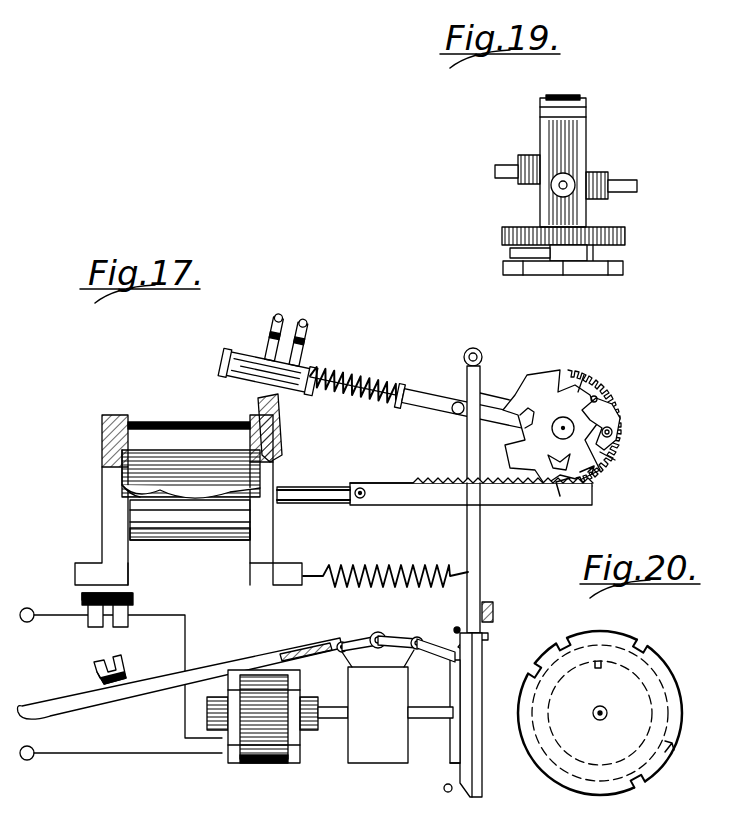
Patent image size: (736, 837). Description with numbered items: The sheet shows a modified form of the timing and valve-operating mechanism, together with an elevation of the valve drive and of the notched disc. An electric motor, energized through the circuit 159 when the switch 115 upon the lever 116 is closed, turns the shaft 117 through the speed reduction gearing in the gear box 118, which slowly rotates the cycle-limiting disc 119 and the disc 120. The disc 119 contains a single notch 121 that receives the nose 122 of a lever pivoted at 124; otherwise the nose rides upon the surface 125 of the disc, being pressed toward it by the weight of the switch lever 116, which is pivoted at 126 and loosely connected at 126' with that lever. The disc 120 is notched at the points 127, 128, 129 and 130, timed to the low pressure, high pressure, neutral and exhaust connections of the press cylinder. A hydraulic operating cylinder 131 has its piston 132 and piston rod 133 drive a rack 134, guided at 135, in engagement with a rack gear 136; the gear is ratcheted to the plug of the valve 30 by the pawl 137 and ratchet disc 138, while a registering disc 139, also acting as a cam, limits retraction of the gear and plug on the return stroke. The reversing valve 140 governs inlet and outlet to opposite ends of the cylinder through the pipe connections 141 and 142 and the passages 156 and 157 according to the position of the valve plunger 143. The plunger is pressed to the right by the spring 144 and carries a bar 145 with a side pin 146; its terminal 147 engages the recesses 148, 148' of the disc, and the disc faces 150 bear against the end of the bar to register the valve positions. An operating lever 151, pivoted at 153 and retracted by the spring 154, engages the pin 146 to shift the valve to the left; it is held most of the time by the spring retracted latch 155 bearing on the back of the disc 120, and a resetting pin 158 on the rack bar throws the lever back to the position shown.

In FIG. 19, the valve 30 is at (575, 153).
In FIG. 19, the rack gear 136 is at (620, 231).
In FIG. 17, the rack gear 136 is at (562, 498).
In FIG. 19, the pawl 137 is at (590, 253).
In FIG. 17, the pawl 137 is at (621, 430).
In FIG. 19, the ratchet disc 138 is at (512, 252).
In FIG. 17, the ratchet disc 138 is at (598, 380).
In FIG. 19, the registering disc 139 is at (572, 272).
In FIG. 17, the registering disc 139 is at (545, 380).
In FIG. 17, the valve 140 is at (230, 380).
In FIG. 17, the pipe connection 141 is at (274, 322).
In FIG. 17, the pipe connection 142 is at (306, 322).
In FIG. 17, the valve plunger 143 is at (374, 380).
In FIG. 17, the spring 144 is at (355, 372).
In FIG. 17, the bar 145 is at (418, 388).
In FIG. 17, the side pin 146 is at (455, 414).
In FIG. 17, the terminal 147 is at (505, 402).
In FIG. 17, the recess 148 is at (509, 437).
In FIG. 17, the recess 148' is at (595, 362).
In FIG. 17, the disc face 150 is at (552, 454).
In FIG. 17, the operating lever 151 is at (480, 547).
In FIG. 17, the pivot 153 is at (471, 348).
In FIG. 17, the spring 154 is at (380, 572).
In FIG. 17, the latch 155 is at (494, 628).
In FIG. 17, the passage 156 is at (113, 415).
In FIG. 17, the passage 157 is at (276, 432).
In FIG. 17, the resetting pin 158 is at (362, 500).
In FIG. 17, the circuit 159 is at (188, 618).
In FIG. 17, the hydraulic operating cylinder 131 is at (180, 540).
In FIG. 17, the piston 132 is at (125, 497).
In FIG. 17, the piston rod 133 is at (292, 503).
In FIG. 17, the rack 134 is at (395, 495).
In FIG. 17, the guide 135 is at (191, 474).
In FIG. 17, the switch 115 is at (102, 638).
In FIG. 17, the lever 116 is at (210, 672).
In FIG. 17, the shaft 117 is at (328, 722).
In FIG. 17, the gear box 118 is at (376, 763).
In FIG. 17, the cycle-limiting disc 119 is at (455, 745).
In FIG. 20, the cycle-limiting disc 119 is at (668, 715).
In FIG. 17, the disc 120 is at (478, 728).
In FIG. 20, the disc 120 is at (678, 692).
In FIG. 17, the notch 121 is at (466, 655).
In FIG. 20, the notch 121 is at (600, 660).
In FIG. 17, the nose 122 is at (450, 660).
In FIG. 17, the pivot 124 is at (415, 636).
In FIG. 17, the surface 125 is at (455, 732).
In FIG. 17, the pivot 126 is at (325, 632).
In FIG. 17, the loose connection 126' is at (367, 623).
In FIG. 20, the notch 127 is at (562, 640).
In FIG. 20, the notch 128 is at (535, 670).
In FIG. 20, the notch 129 is at (633, 780).
In FIG. 20, the notch 130 is at (642, 644).